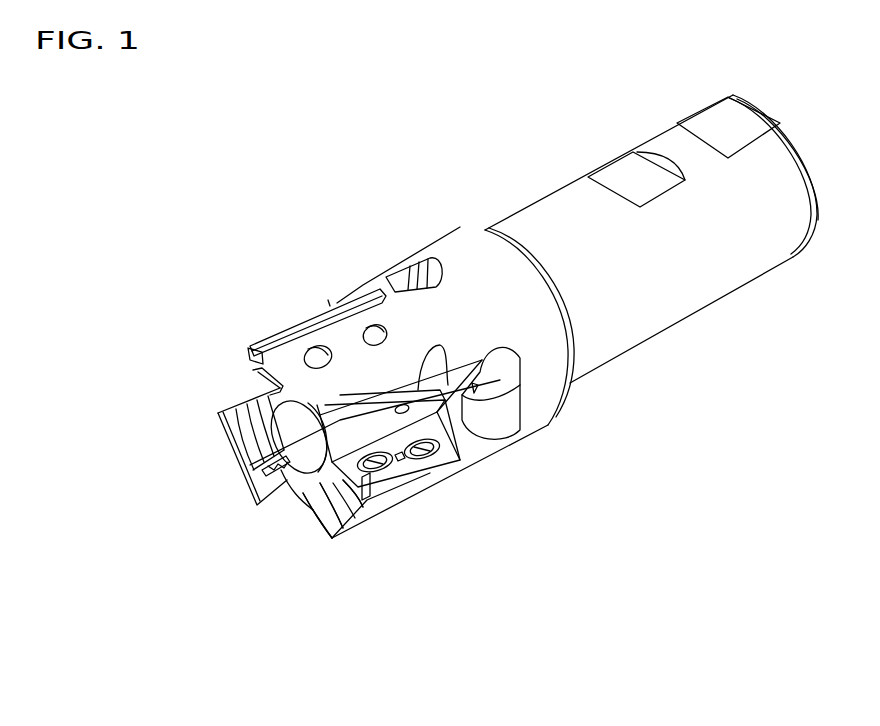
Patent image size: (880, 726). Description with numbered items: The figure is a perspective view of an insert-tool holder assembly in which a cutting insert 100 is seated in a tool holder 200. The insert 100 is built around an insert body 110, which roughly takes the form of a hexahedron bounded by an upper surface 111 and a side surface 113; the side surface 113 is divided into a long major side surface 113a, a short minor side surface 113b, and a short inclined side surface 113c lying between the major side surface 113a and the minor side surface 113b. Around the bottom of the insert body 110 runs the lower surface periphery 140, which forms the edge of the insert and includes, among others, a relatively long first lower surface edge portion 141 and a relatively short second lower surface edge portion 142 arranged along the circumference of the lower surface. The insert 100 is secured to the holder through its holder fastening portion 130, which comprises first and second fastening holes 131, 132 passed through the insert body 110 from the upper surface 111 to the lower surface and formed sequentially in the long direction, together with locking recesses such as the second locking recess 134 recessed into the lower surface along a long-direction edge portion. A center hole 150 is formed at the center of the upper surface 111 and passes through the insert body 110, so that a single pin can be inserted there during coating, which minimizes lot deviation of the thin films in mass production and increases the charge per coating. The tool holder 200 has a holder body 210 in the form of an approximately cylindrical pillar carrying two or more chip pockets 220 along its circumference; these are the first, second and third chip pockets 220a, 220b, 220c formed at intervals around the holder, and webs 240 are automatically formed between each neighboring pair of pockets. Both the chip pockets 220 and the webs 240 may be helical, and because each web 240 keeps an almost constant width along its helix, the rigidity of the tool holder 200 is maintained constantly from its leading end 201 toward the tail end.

The insert 100 is at (246, 353).
The insert body 110 is at (471, 455).
The upper surface 111 is at (470, 440).
The side surface 113 is at (441, 525).
The major side surface 113a is at (435, 465).
The minor side surface 113b is at (347, 512).
The inclined side surface 113c is at (325, 512).
The holder fastening portion 130 is at (398, 563).
The first fastening hole 131 is at (422, 448).
The second fastening hole 132 is at (470, 437).
The second locking recess 134 is at (325, 520).
The lower surface periphery 140 is at (396, 542).
The first lower surface edge portion 141 is at (403, 507).
The second lower surface edge portion 142 is at (333, 512).
The center hole 150 is at (450, 445).
The tool holder 200 is at (462, 231).
The leading end 201 is at (318, 508).
The holder body 210 is at (428, 243).
The chip pockets 220 is at (192, 476).
The first chip pocket 220a is at (250, 465).
The second chip pocket 220b is at (237, 377).
The third chip pocket 220c is at (285, 492).
The web 240 is at (333, 307).